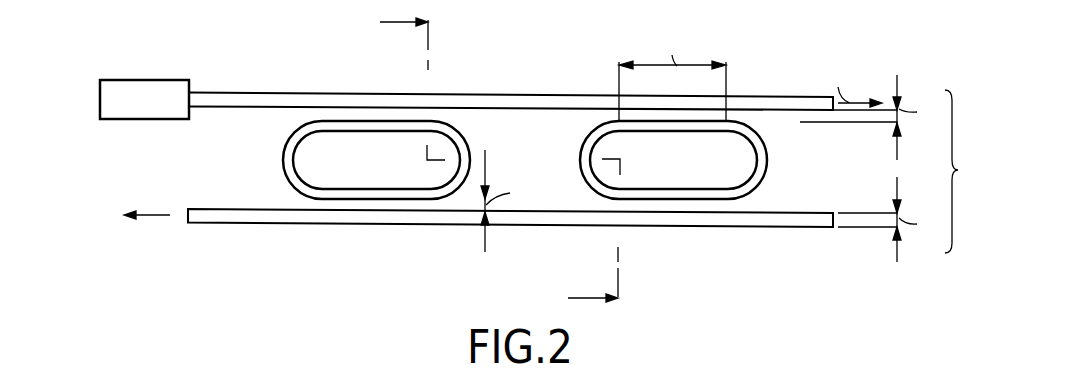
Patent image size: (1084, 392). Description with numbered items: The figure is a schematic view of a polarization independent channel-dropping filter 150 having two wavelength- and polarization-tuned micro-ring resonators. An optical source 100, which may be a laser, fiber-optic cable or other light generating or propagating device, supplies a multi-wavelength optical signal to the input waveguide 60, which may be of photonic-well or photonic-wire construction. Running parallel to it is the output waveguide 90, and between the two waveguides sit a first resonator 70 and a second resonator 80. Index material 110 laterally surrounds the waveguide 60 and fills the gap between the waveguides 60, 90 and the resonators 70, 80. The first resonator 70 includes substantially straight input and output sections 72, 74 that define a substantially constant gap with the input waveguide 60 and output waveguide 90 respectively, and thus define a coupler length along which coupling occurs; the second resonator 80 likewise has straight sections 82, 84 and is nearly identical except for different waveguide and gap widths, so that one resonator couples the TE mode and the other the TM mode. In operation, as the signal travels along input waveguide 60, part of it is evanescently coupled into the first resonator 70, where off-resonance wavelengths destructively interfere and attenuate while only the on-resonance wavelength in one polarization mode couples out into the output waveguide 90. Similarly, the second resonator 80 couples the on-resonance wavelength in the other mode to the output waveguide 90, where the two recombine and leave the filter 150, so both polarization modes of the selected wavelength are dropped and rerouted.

The polarization independent channel-dropping filter 150 is at (199, 50).
The optical source 100 is at (143, 80).
The input waveguide 60 is at (208, 97).
The first resonator 70 is at (455, 136).
The input section 72 is at (341, 129).
The output section 74 is at (338, 194).
The second resonator 80 is at (763, 146).
The straight section 82 is at (703, 130).
The straight section 84 is at (703, 193).
The output waveguide 90 is at (243, 217).
The index material 110 is at (372, 76).